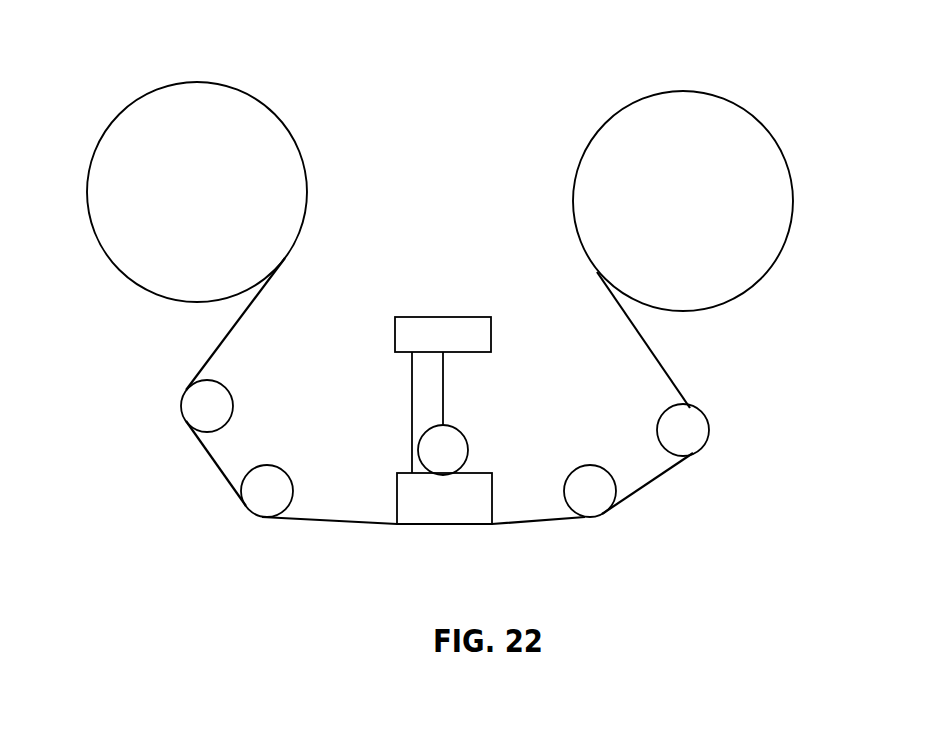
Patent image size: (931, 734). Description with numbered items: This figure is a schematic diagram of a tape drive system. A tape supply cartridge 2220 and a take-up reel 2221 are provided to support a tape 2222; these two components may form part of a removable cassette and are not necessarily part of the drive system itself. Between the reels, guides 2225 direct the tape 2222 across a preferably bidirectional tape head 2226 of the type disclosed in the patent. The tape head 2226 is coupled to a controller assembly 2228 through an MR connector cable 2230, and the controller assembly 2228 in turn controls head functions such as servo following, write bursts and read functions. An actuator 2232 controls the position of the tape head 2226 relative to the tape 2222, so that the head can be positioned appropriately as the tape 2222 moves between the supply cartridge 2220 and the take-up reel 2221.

The tape supply cartridge 2220 is at (298, 144).
The take-up reel 2221 is at (683, 90).
The tape 2222 is at (333, 523).
The guides 2225 is at (237, 397).
The tape head 2226 is at (495, 500).
The controller assembly 2228 is at (442, 316).
The MR connector cable 2230 is at (412, 448).
The actuator 2232 is at (465, 432).